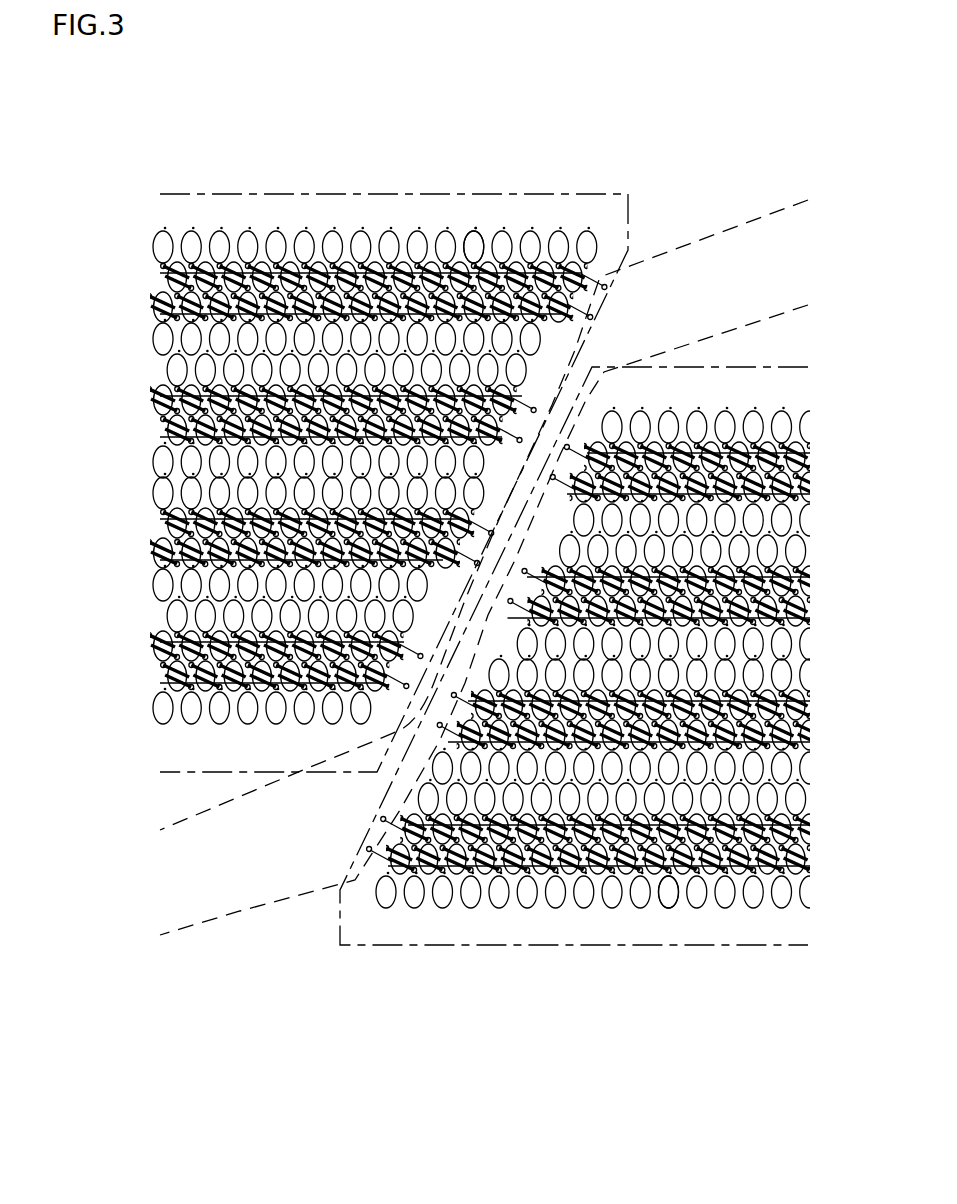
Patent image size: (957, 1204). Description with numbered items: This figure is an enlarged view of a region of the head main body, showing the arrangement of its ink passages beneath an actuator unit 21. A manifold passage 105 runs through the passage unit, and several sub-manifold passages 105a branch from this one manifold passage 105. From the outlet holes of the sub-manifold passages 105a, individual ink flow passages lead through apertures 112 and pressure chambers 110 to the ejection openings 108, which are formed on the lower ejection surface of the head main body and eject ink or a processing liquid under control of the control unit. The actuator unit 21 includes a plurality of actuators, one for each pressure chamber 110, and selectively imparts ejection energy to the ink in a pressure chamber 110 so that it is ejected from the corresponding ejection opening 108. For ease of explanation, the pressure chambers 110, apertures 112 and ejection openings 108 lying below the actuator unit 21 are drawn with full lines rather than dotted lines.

The actuator unit 21 is at (603, 194).
The manifold passage 105 is at (705, 243).
The sub-manifold passages 105a is at (430, 561).
The ejection openings 108 is at (493, 577).
The pressure chambers 110 is at (480, 232).
The apertures 112 is at (345, 270).